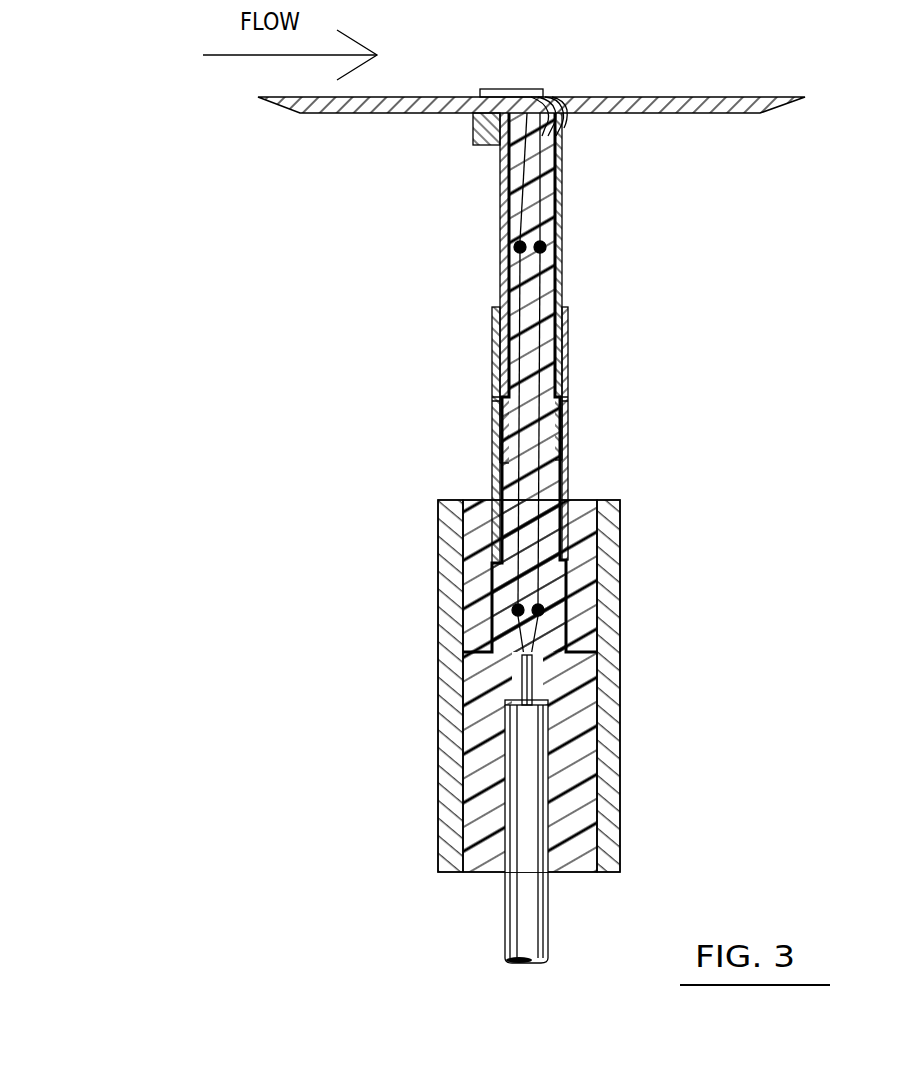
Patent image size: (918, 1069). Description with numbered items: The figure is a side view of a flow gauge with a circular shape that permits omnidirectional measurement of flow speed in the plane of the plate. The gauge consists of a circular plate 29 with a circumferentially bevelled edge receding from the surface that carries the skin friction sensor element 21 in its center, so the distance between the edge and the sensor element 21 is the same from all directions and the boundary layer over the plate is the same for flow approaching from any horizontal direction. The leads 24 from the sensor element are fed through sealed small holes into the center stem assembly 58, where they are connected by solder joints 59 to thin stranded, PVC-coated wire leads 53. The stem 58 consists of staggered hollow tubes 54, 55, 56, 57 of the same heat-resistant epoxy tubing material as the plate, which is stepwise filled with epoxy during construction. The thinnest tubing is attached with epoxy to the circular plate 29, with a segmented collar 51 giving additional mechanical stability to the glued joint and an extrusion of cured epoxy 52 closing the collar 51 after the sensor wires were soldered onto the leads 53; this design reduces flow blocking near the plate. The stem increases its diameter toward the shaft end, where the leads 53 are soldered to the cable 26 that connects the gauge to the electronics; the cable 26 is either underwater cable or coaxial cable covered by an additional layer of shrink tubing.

The skin friction sensor element 21 is at (488, 89).
The leads 24 is at (522, 200).
The cable 26 is at (548, 935).
The circular plate 29 is at (657, 97).
The segmented collar 51 is at (473, 143).
The extrusion of cured epoxy 52 is at (562, 128).
The wire leads 53 is at (500, 397).
The hollow tube 54 is at (562, 211).
The hollow tube 55 is at (568, 312).
The hollow tube 56 is at (578, 500).
The hollow tube 57 is at (618, 730).
The center stem assembly 58 is at (660, 307).
The solder joints 59 is at (512, 247).